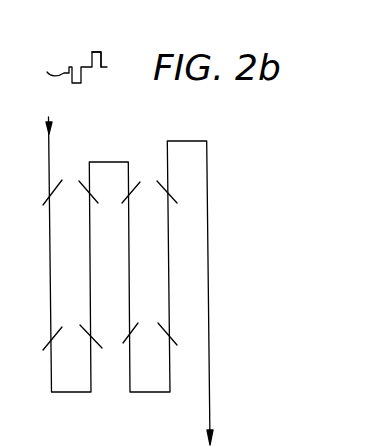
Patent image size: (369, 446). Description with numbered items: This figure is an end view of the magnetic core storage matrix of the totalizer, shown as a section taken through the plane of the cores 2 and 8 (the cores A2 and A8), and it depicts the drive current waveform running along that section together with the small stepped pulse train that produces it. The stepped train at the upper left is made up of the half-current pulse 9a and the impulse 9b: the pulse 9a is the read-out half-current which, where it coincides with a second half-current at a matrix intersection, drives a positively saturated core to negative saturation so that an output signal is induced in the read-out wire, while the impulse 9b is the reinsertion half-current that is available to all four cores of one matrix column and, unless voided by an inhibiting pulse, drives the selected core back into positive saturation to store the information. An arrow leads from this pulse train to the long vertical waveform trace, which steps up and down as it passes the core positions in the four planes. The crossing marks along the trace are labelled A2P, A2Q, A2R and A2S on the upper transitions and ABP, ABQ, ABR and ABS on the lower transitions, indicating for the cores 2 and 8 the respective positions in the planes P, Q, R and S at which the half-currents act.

The half-current pulse 9a is at (67, 67).
The impulse 9b is at (90, 53).
The core 2 is at (90, 85).
The core 8 is at (124, 265).
The transition edge A2P is at (56, 188).
The transition edge A2Q is at (102, 200).
The transition edge A2R is at (135, 184).
The transition edge A2S is at (178, 197).
The transition edge ABP is at (58, 330).
The transition edge ABQ is at (103, 348).
The transition edge ABR is at (130, 330).
The transition edge ABS is at (175, 340).